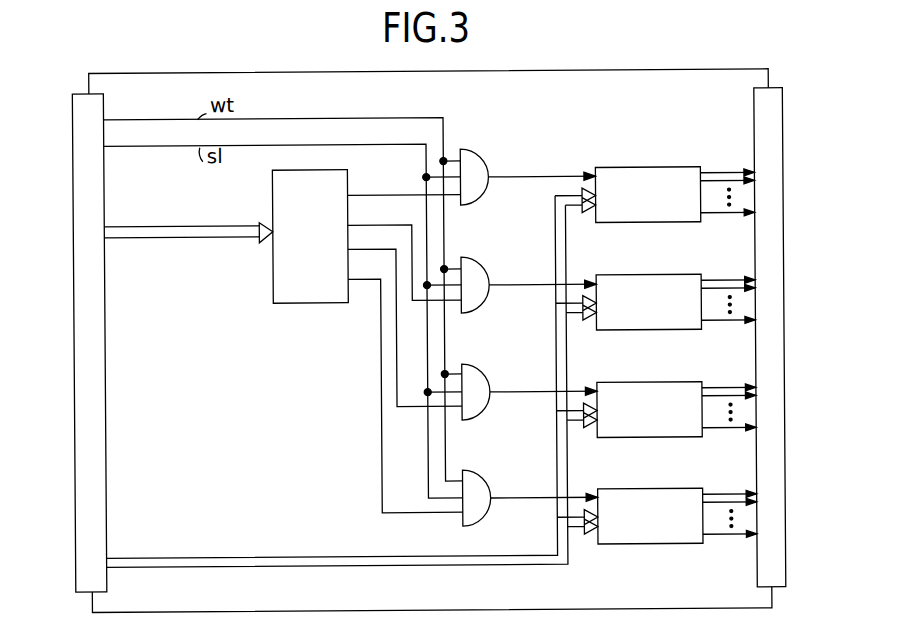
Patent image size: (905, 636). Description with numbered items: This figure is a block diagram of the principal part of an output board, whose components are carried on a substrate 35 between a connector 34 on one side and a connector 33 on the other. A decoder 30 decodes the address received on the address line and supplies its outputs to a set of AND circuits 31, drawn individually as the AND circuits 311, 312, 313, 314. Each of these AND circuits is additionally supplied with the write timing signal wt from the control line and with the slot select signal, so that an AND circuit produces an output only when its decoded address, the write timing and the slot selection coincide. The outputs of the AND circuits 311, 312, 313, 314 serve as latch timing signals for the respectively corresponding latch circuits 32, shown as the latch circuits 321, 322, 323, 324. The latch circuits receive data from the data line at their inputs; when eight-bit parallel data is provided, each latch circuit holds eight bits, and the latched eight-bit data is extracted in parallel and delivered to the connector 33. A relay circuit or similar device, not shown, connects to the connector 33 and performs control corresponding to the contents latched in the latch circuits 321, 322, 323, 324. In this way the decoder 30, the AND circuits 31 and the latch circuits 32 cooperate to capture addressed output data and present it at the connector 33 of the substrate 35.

The decoder 30 is at (312, 302).
The AND circuits 31 is at (529, 323).
The AND circuit 311 is at (477, 153).
The AND circuit 312 is at (478, 258).
The AND circuit 313 is at (480, 372).
The AND circuit 314 is at (481, 478).
The latch circuits 32 is at (669, 339).
The latch circuit 321 is at (651, 168).
The latch circuit 322 is at (651, 276).
The latch circuit 323 is at (651, 384).
The latch circuit 324 is at (655, 490).
The connector 33 is at (784, 129).
The connector 34 is at (74, 122).
The substrate 35 is at (635, 71).